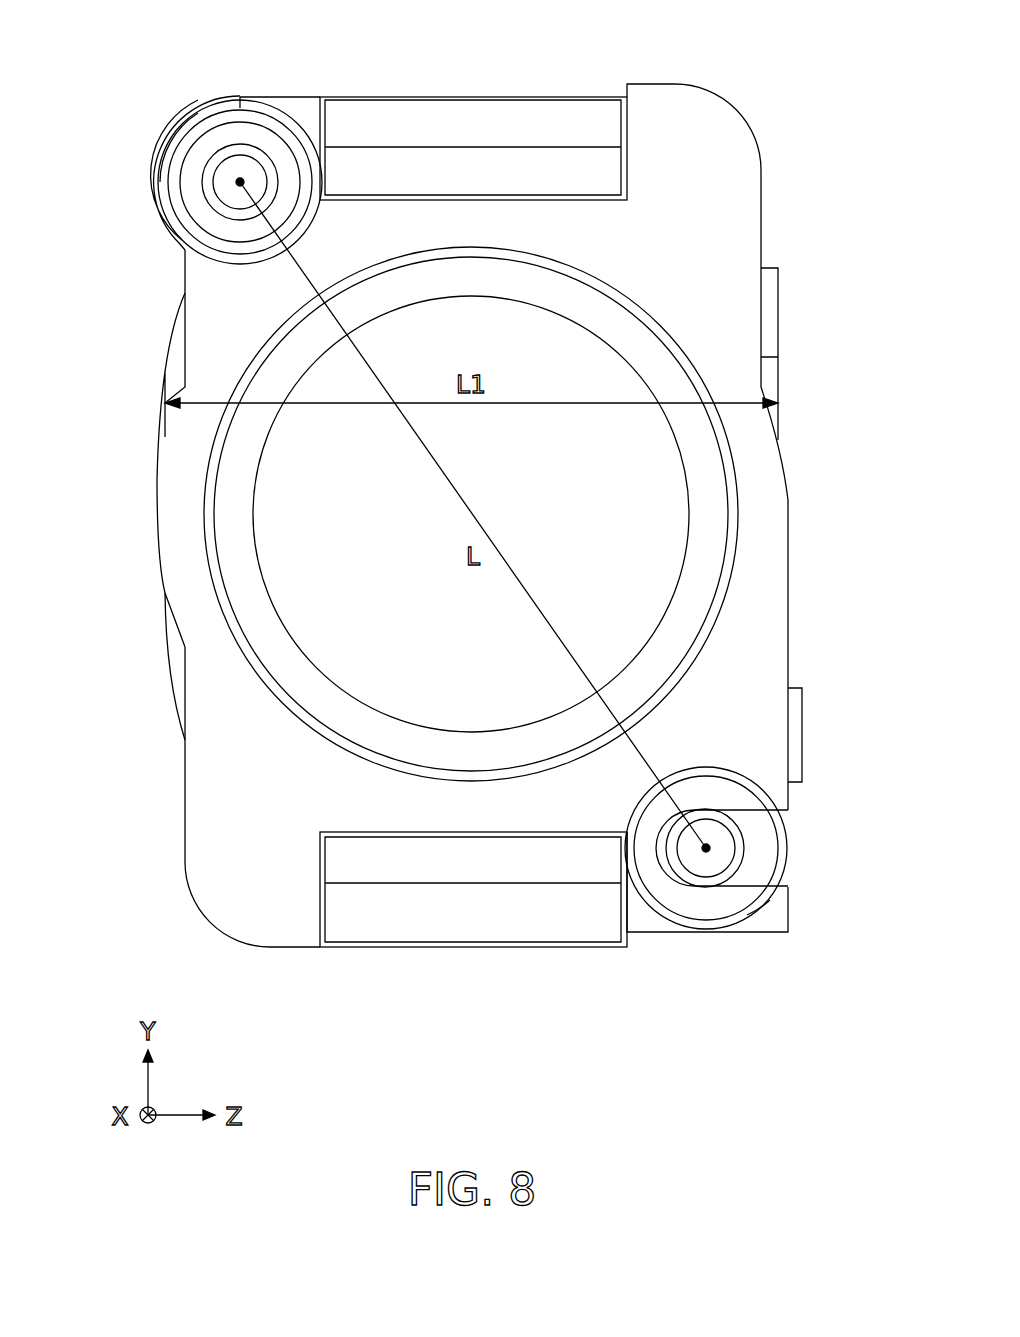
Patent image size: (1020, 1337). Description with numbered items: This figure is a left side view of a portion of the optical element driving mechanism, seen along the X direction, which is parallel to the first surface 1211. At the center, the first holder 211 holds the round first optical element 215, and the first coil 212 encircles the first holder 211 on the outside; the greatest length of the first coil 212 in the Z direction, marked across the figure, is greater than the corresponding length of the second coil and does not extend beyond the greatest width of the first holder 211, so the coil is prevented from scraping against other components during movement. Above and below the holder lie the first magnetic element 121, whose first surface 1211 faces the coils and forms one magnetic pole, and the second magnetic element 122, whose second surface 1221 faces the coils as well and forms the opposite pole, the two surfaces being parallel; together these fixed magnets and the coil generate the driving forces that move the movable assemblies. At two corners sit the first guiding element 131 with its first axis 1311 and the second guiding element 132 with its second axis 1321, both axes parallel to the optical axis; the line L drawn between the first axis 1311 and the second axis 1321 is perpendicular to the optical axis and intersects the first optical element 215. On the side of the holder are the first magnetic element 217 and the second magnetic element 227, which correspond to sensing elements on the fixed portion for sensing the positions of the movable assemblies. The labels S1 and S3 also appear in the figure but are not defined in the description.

The first magnetic element 121 is at (402, 112).
The first surface 1211 is at (507, 193).
The second magnetic element 122 is at (518, 922).
The second surface 1221 is at (408, 838).
The first guiding element 131 is at (222, 194).
The first axis 1311 is at (234, 178).
The second guiding element 132 is at (722, 838).
The second axis 1321 is at (718, 856).
The first holder 211 is at (772, 550).
The first coil 212 is at (172, 377).
The first optical element 215 is at (628, 466).
The first magnetic element 217 is at (772, 312).
The second magnetic element 227 is at (800, 733).
The first surface S1 is at (198, 113).
The third surface S3 is at (747, 915).